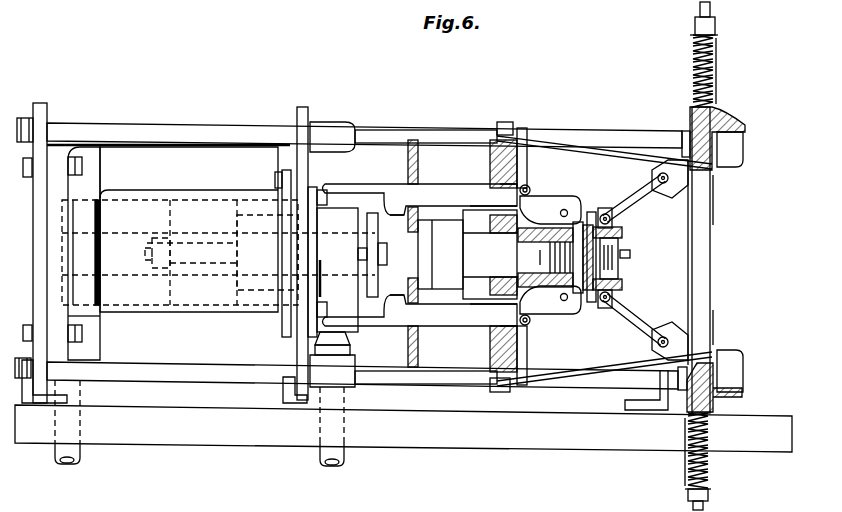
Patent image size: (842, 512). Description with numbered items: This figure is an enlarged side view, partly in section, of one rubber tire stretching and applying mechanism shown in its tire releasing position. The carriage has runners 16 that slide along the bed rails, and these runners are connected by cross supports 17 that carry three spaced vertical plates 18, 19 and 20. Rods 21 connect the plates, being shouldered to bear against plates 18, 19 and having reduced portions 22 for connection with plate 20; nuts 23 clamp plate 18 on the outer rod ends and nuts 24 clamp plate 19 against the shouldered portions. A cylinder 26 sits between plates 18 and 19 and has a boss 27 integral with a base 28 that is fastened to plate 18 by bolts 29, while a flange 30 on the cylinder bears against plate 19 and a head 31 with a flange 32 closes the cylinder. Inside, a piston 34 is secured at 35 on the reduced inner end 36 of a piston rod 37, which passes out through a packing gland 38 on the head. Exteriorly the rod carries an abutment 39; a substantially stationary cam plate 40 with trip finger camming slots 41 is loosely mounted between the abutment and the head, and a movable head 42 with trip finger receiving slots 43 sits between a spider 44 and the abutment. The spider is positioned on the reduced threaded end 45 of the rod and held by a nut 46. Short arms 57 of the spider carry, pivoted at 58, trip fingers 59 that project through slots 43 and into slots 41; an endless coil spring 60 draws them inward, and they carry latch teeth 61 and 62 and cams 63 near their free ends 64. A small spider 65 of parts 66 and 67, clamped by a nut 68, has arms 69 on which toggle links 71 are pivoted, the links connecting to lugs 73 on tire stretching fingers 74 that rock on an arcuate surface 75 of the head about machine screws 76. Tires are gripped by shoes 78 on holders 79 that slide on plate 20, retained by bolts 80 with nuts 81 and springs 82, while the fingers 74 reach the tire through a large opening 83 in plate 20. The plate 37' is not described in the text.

The runners 16 is at (190, 445).
The cross supports 17 is at (42, 403).
The plate 18 is at (47, 108).
The plate 19 is at (297, 108).
The plate 20 is at (692, 123).
The rods 21 is at (135, 123).
The reduced portions 22 is at (375, 130).
The nuts 23 is at (27, 118).
The nuts 24 is at (335, 122).
The cylinder 26 is at (135, 205).
The boss 27 is at (95, 355).
The base 28 is at (78, 225).
The bolts 29 is at (82, 165).
The flange 30 is at (282, 182).
The head 31 is at (339, 218).
The flange 32 is at (313, 187).
The piston 34 is at (205, 208).
The piston securing point 35 is at (155, 240).
The reduced inner end 36 is at (212, 265).
The piston rod 37 is at (267, 250).
The plate 37' is at (625, 257).
The packing gland 38 is at (420, 252).
The abutment 39 is at (485, 245).
The cam plate 40 is at (417, 160).
The trip finger camming slots 41 is at (413, 182).
The head 42 is at (517, 170).
The trip finger receiving slots 43 is at (490, 165).
The spider 44 is at (552, 226).
The reduced threaded end 45 is at (525, 248).
The nut 46 is at (590, 303).
The arms 57 is at (566, 210).
The pivot 58 is at (565, 209).
The trip fingers 59 is at (472, 200).
The coil spring 60 is at (531, 190).
The latch tooth 61 is at (520, 208).
The latch tooth 62 is at (475, 235).
The cams 63 is at (392, 257).
The free ends 64 is at (350, 184).
The small spider 65 is at (604, 308).
The spider part 66 is at (605, 210).
The spider part 67 is at (622, 233).
The nut 68 is at (620, 246).
The arms 69 is at (611, 219).
The toggle links 71 is at (643, 192).
The lugs 73 is at (667, 184).
The tire stretching and applying fingers 74 is at (628, 147).
The arcuate surface 75 is at (522, 150).
The machine screws 76 is at (508, 125).
The tire gripping shoes 78 is at (744, 150).
The holders 79 is at (718, 128).
The retainer bolts 80 is at (713, 70).
The nuts 81 is at (716, 26).
The springs 82 is at (696, 60).
The opening 83 is at (710, 240).